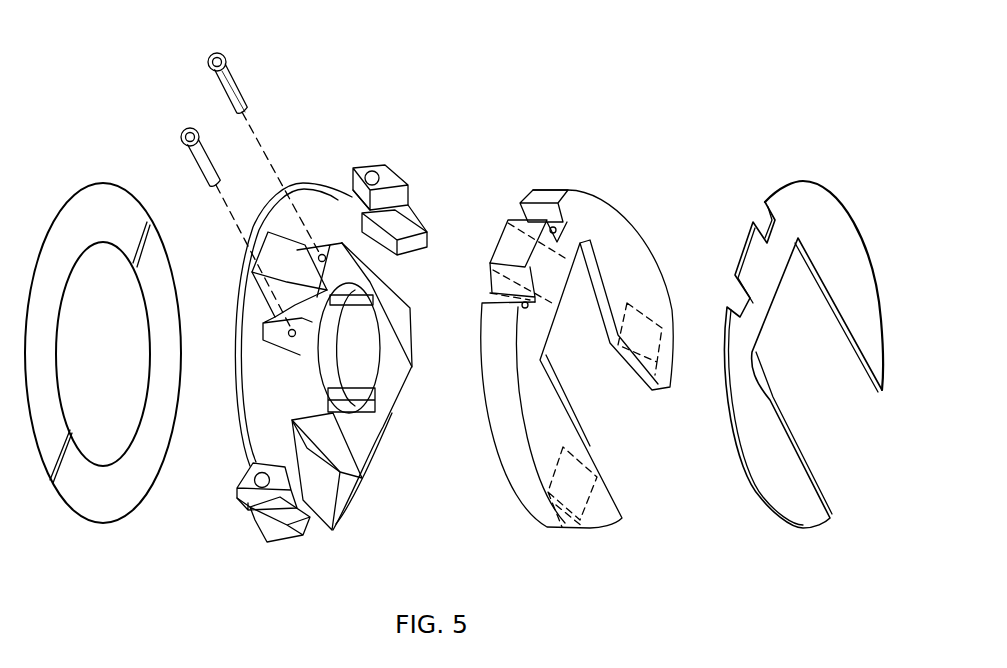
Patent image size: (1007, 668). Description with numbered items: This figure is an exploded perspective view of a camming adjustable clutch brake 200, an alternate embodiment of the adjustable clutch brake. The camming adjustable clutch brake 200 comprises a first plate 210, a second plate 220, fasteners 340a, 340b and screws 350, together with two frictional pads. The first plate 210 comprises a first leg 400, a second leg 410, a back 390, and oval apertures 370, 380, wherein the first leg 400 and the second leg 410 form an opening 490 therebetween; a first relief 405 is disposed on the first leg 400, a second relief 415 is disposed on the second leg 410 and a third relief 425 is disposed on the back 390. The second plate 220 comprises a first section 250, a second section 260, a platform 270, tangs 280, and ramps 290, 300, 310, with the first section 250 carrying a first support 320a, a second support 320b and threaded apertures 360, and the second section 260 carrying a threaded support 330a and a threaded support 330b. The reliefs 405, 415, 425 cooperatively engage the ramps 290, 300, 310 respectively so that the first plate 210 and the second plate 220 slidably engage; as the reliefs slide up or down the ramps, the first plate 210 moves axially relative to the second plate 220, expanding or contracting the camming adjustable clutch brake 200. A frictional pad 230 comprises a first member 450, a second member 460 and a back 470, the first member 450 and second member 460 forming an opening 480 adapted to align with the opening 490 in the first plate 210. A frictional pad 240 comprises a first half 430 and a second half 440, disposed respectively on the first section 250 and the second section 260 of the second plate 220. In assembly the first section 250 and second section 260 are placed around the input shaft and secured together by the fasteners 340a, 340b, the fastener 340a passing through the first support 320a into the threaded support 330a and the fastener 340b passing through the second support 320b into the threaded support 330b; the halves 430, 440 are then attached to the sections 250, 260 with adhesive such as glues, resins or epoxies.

The camming adjustable clutch brake 200 is at (712, 128).
The first plate 210 is at (648, 257).
The second plate 220 is at (325, 203).
The frictional pad 230 is at (778, 495).
The frictional pad 240 is at (105, 373).
The first section 250 is at (288, 272).
The second section 260 is at (420, 258).
The platform 270 is at (355, 268).
The tangs 280 is at (362, 381).
The ramp 290 is at (392, 305).
The ramp 300 is at (315, 487).
The ramp 310 is at (287, 185).
The first support 320a is at (405, 185).
The second support 320b is at (243, 513).
The threaded support 330a is at (410, 215).
The threaded support 330b is at (265, 530).
The fastener 340a is at (372, 172).
The fastener 340b is at (258, 476).
The screws 350 is at (202, 164).
The threaded apertures 360 is at (296, 330).
The oval aperture 370 is at (537, 308).
The oval aperture 380 is at (527, 303).
The back 390 is at (558, 268).
The first leg 400 is at (652, 280).
The first relief 405 is at (633, 372).
The second leg 410 is at (607, 517).
The second relief 415 is at (586, 454).
The third relief 425 is at (492, 238).
The first half 430 is at (38, 347).
The second half 440 is at (87, 493).
The first member 450 is at (857, 263).
The second member 460 is at (810, 503).
The back 470 is at (750, 257).
The opening 480 is at (828, 415).
The opening 490 is at (617, 417).